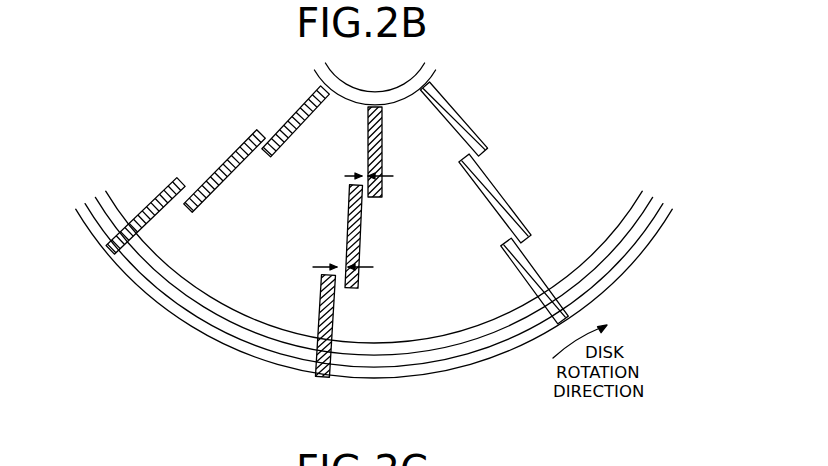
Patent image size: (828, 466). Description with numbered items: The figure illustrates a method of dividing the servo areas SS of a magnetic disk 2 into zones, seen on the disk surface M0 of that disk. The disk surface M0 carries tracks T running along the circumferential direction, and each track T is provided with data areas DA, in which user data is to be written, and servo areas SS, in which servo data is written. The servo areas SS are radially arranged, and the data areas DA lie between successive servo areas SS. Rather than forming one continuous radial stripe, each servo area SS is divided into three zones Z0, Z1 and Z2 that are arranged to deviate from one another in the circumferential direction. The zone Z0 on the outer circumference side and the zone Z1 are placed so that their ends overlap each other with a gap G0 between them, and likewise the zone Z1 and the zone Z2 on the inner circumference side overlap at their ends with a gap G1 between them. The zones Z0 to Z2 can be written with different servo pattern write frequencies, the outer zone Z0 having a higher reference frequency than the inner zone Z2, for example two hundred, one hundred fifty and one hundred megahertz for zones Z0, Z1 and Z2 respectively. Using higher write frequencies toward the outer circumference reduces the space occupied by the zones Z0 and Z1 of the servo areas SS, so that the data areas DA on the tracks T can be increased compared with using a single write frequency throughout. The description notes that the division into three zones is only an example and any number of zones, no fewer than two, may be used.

The magnetic disk 2 is at (633, 268).
The track T is at (648, 230).
The zone Z0 is at (335, 325).
The zone Z1 is at (362, 250).
The zone Z2 is at (379, 165).
The gap G0 is at (339, 256).
The gap G1 is at (360, 168).
The disk surface M0 is at (573, 190).
The data area DA is at (300, 394).
The servo area SS is at (332, 386).